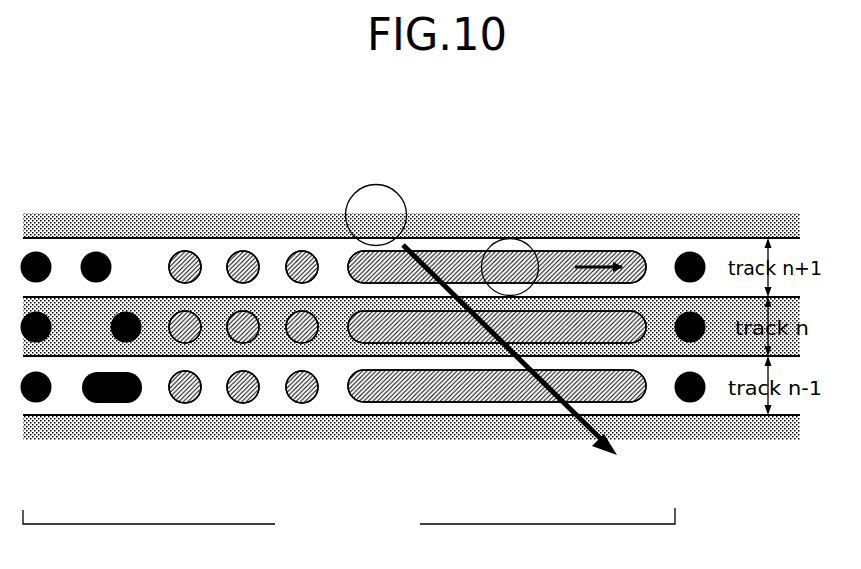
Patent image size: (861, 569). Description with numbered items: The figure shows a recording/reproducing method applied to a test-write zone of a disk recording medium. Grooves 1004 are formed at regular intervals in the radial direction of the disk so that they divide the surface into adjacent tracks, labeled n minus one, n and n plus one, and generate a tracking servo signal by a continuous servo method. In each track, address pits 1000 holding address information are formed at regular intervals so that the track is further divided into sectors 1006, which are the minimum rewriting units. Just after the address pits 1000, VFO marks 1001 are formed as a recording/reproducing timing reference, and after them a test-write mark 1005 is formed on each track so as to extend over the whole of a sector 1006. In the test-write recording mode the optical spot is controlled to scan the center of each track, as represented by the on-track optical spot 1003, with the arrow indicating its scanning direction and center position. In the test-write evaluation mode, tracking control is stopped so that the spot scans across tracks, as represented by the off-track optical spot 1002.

The address pit 1000 is at (690, 252).
The VFO mark 1001 is at (243, 252).
The off-track optical spot 1002 is at (376, 210).
The on-track optical spot 1003 is at (508, 243).
The groove 1004 is at (335, 332).
The test-write mark 1005 is at (480, 384).
The sector 1006 is at (349, 524).